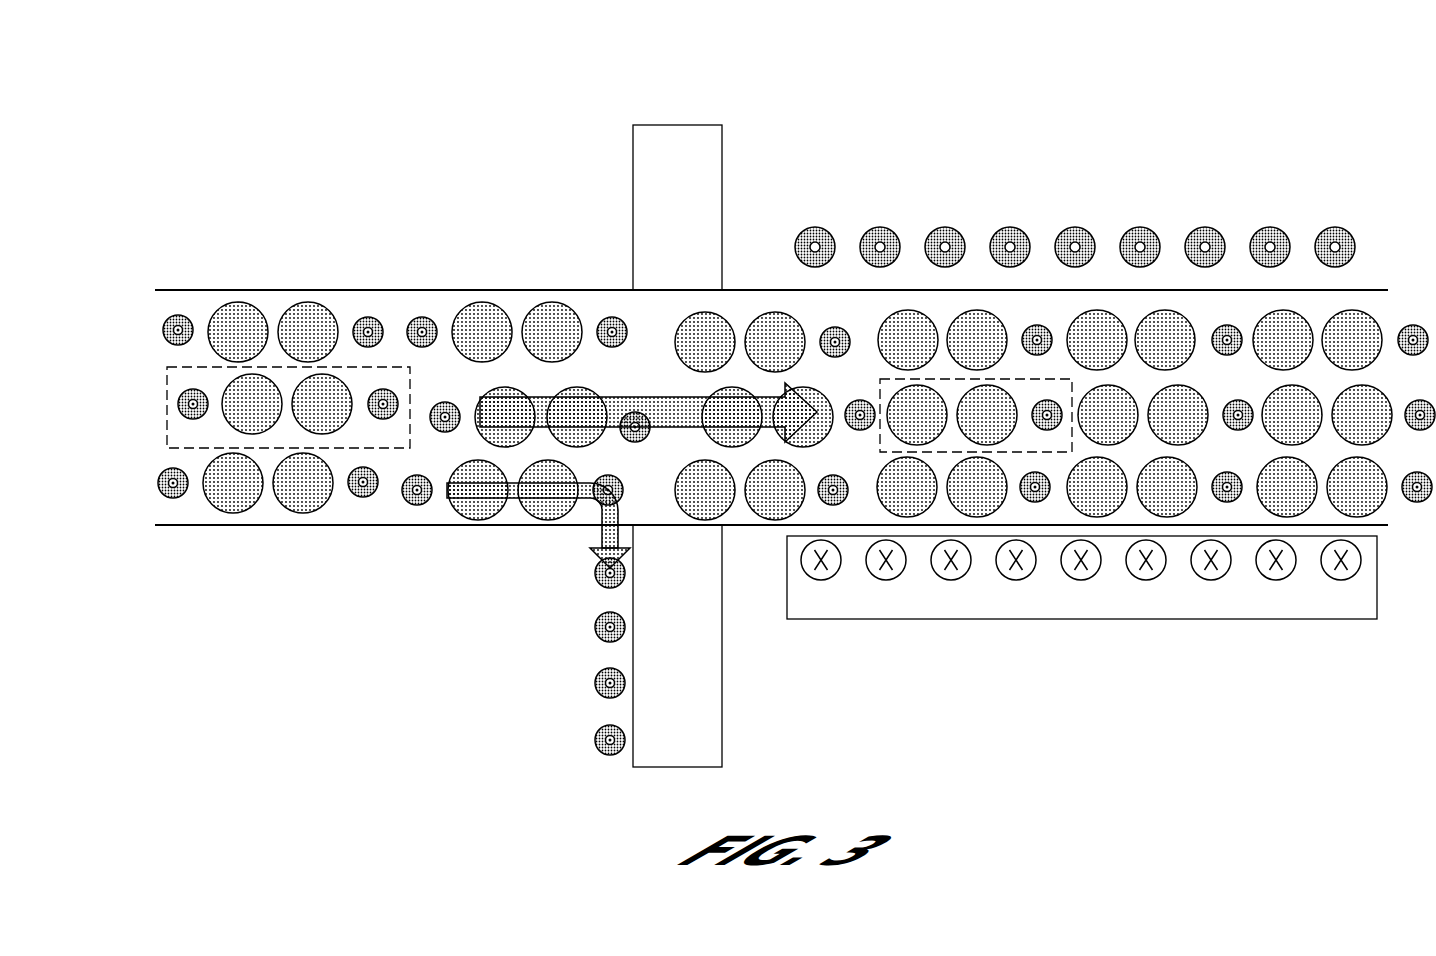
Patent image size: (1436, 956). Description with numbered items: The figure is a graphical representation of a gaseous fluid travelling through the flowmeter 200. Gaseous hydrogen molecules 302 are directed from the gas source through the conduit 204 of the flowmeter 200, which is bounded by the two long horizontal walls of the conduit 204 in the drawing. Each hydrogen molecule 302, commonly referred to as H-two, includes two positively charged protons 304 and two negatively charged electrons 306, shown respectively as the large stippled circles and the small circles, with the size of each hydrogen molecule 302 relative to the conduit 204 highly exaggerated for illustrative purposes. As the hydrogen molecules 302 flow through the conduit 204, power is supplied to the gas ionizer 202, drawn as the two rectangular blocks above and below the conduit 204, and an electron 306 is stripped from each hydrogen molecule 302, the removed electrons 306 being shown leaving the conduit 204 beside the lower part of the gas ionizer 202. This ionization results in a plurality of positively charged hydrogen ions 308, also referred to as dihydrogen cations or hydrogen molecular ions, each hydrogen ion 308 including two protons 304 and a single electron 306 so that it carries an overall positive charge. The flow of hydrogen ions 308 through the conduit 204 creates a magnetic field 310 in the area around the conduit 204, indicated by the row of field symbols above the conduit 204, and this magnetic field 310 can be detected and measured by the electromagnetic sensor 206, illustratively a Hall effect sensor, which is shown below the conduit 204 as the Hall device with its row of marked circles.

The flowmeter 200 is at (751, 400).
The gas ionizer 202 is at (682, 140).
The conduit 204 is at (447, 290).
The electromagnetic sensor 206 is at (1200, 605).
The hydrogen molecule 302 is at (167, 424).
The proton 304 is at (237, 497).
The electron 306 is at (180, 330).
The hydrogen ion 308 is at (1015, 379).
The magnetic field 310 is at (1272, 227).